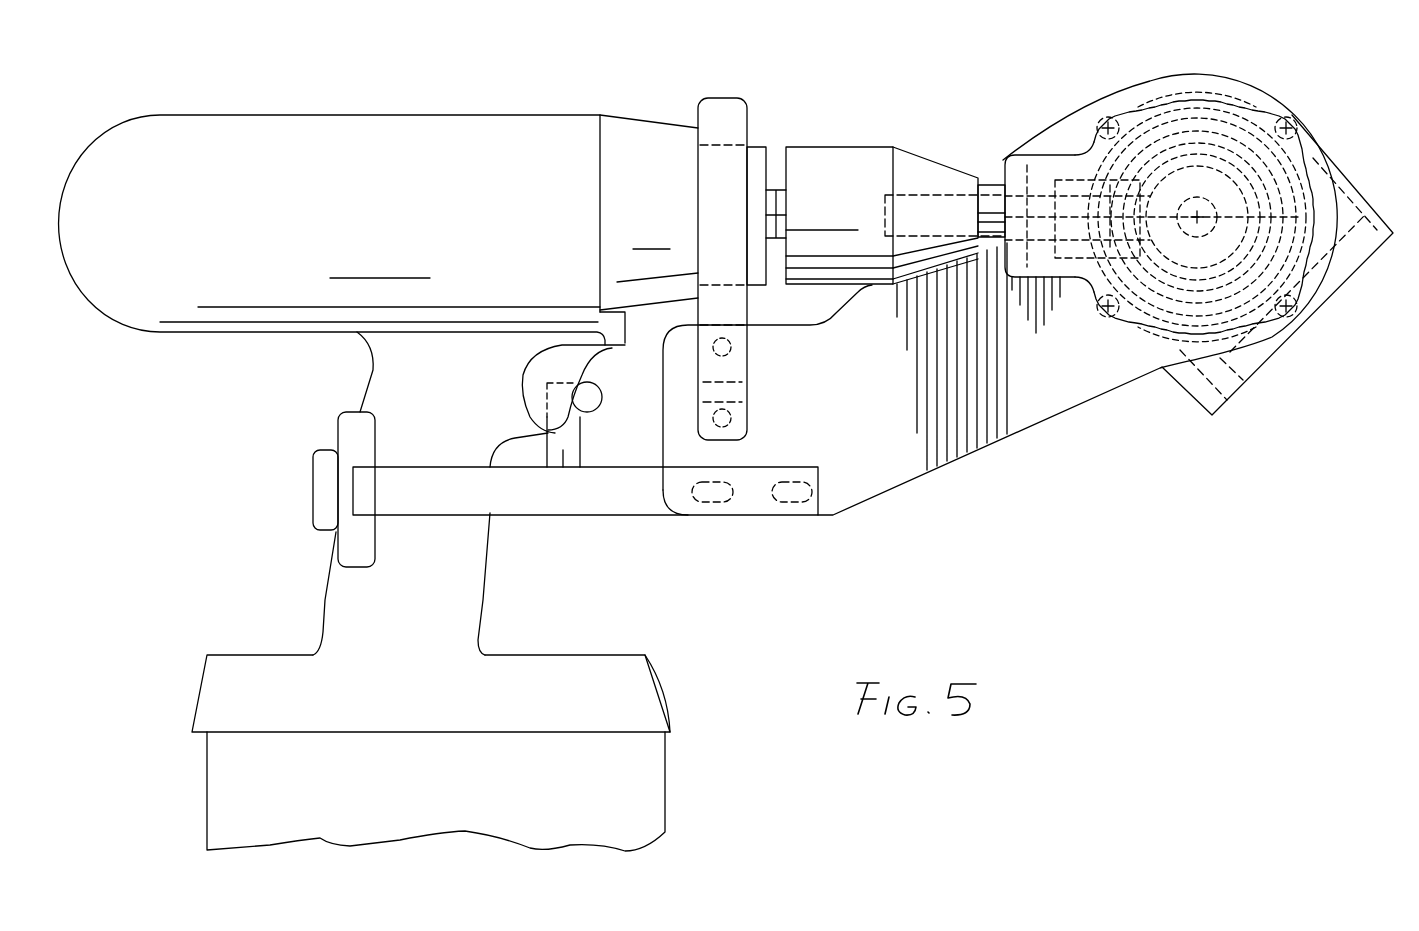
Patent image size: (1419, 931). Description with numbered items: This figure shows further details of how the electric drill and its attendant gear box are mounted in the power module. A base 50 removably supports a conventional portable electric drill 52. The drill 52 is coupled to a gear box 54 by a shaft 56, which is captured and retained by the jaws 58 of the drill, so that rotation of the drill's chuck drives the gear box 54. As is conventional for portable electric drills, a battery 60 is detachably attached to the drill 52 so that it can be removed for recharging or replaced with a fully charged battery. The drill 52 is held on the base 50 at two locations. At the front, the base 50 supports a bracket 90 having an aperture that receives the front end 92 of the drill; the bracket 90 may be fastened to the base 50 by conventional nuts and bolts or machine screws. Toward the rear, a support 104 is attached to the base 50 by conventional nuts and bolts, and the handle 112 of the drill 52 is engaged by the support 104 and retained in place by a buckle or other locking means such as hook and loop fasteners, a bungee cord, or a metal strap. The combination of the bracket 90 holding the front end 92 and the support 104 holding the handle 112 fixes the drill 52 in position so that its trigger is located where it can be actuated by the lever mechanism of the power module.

The base 50 is at (870, 500).
The portable electric drill 52 is at (433, 113).
The gear box 54 is at (1194, 102).
The shaft 56 is at (990, 203).
The jaws 58 is at (905, 147).
The battery 60 is at (667, 793).
The bracket 90 is at (746, 102).
The front end 92 is at (761, 147).
The support 104 is at (645, 515).
The handle 112 is at (488, 582).